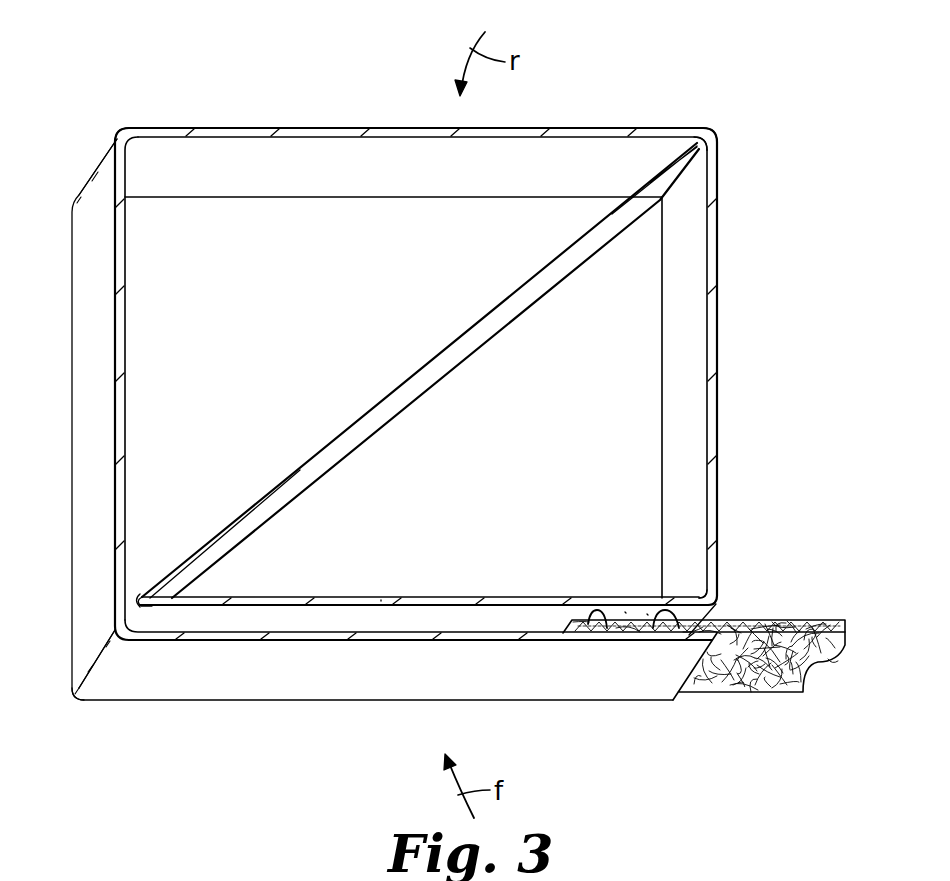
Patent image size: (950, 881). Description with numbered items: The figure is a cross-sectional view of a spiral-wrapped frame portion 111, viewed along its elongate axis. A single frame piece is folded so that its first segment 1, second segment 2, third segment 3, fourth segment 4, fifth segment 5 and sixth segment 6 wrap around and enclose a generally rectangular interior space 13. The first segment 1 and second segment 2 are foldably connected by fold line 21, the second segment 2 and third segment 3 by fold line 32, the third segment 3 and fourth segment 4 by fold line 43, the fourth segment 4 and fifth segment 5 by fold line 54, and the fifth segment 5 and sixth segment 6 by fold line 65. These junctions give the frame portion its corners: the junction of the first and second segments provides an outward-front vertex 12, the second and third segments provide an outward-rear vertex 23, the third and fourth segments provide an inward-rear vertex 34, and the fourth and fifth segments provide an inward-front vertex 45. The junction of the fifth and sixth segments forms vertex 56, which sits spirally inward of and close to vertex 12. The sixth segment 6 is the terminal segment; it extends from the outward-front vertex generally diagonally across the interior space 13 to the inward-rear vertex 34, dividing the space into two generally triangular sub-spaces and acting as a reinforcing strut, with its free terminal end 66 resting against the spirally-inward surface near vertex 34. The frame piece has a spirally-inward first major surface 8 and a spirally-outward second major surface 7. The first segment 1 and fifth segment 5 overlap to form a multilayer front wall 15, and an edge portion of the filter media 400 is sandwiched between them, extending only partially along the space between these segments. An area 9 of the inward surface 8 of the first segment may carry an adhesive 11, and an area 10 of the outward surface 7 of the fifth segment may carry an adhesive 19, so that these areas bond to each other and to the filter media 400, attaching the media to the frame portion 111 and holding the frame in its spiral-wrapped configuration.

The frame portion 111 is at (748, 61).
The first segment 1 is at (264, 682).
The second segment 2 is at (80, 475).
The third segment 3 is at (322, 128).
The fourth segment 4 is at (714, 400).
The fifth segment 5 is at (466, 597).
The sixth segment 6 is at (400, 384).
The second major surface 7 is at (80, 395).
The first major surface 8 is at (291, 180).
The area 9 is at (653, 628).
The area 10 is at (654, 610).
The adhesive 11 is at (607, 628).
The vertex 12 is at (85, 656).
The interior space 13 is at (312, 363).
The multilayer front wall 15 is at (419, 637).
The adhesive 19 is at (615, 608).
The fold line 21 is at (88, 693).
The vertex 23 is at (110, 128).
The fold line 32 is at (85, 178).
The vertex 34 is at (716, 132).
The fold line 43 is at (708, 128).
The vertex 45 is at (716, 604).
The fold line 54 is at (710, 602).
The vertex 56 is at (152, 598).
The fold line 65 is at (138, 596).
The terminal end 66 is at (706, 152).
The filter media 400 is at (806, 680).